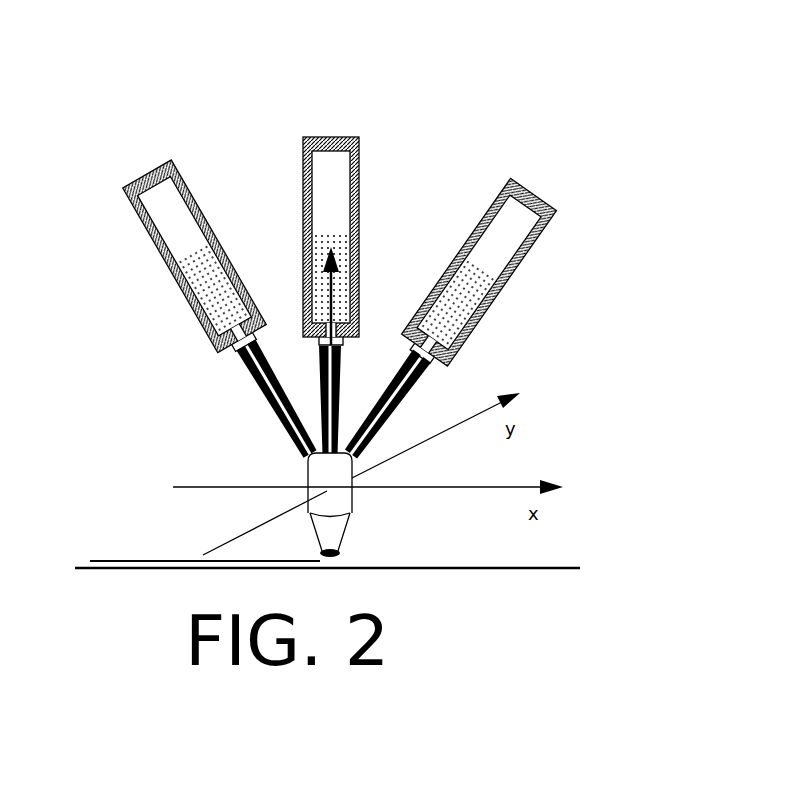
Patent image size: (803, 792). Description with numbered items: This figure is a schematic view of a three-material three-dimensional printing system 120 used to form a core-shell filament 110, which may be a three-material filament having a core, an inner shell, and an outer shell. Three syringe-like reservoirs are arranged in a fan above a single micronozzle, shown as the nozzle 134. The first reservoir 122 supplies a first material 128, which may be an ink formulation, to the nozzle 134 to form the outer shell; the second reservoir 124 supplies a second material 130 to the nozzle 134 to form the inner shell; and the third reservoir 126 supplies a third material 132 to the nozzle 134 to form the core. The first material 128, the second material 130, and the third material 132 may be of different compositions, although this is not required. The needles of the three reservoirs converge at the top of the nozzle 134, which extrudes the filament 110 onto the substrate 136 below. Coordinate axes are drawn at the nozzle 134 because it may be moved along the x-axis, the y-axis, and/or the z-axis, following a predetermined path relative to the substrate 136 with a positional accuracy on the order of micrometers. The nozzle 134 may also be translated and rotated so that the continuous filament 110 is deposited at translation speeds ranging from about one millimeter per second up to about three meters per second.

The core-shell filament 110 is at (153, 562).
The 3D printing system 120 is at (484, 113).
The first reservoir 122 is at (557, 200).
The second reservoir 124 is at (323, 137).
The third reservoir 126 is at (157, 162).
The first material 128 is at (492, 257).
The second material 130 is at (345, 285).
The third material 132 is at (205, 253).
The nozzle 134 is at (343, 497).
The substrate 136 is at (483, 570).